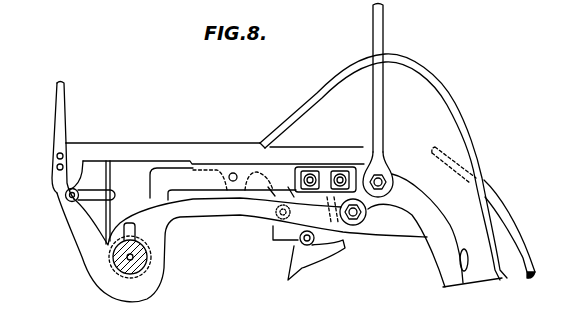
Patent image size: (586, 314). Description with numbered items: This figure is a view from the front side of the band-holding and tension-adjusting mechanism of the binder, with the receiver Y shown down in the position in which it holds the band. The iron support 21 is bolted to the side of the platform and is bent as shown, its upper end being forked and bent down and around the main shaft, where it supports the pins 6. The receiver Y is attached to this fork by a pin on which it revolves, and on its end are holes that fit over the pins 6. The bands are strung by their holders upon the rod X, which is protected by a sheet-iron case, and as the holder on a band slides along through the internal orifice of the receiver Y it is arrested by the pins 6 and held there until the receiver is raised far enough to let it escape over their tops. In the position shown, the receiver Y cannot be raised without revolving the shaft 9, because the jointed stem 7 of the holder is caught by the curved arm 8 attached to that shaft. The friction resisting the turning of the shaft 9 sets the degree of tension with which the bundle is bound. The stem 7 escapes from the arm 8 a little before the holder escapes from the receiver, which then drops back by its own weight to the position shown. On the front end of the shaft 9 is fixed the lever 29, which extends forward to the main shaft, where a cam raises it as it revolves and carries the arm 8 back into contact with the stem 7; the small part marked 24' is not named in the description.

The receiver Y is at (208, 163).
The lever 29 is at (242, 247).
The tab 24' is at (137, 225).
The jointed stem 7 is at (300, 239).
The curved arm 8 is at (310, 238).
The shaft 9 is at (367, 214).
The pins 6 is at (383, 142).
The rod X is at (509, 229).
The iron support 21 is at (336, 230).